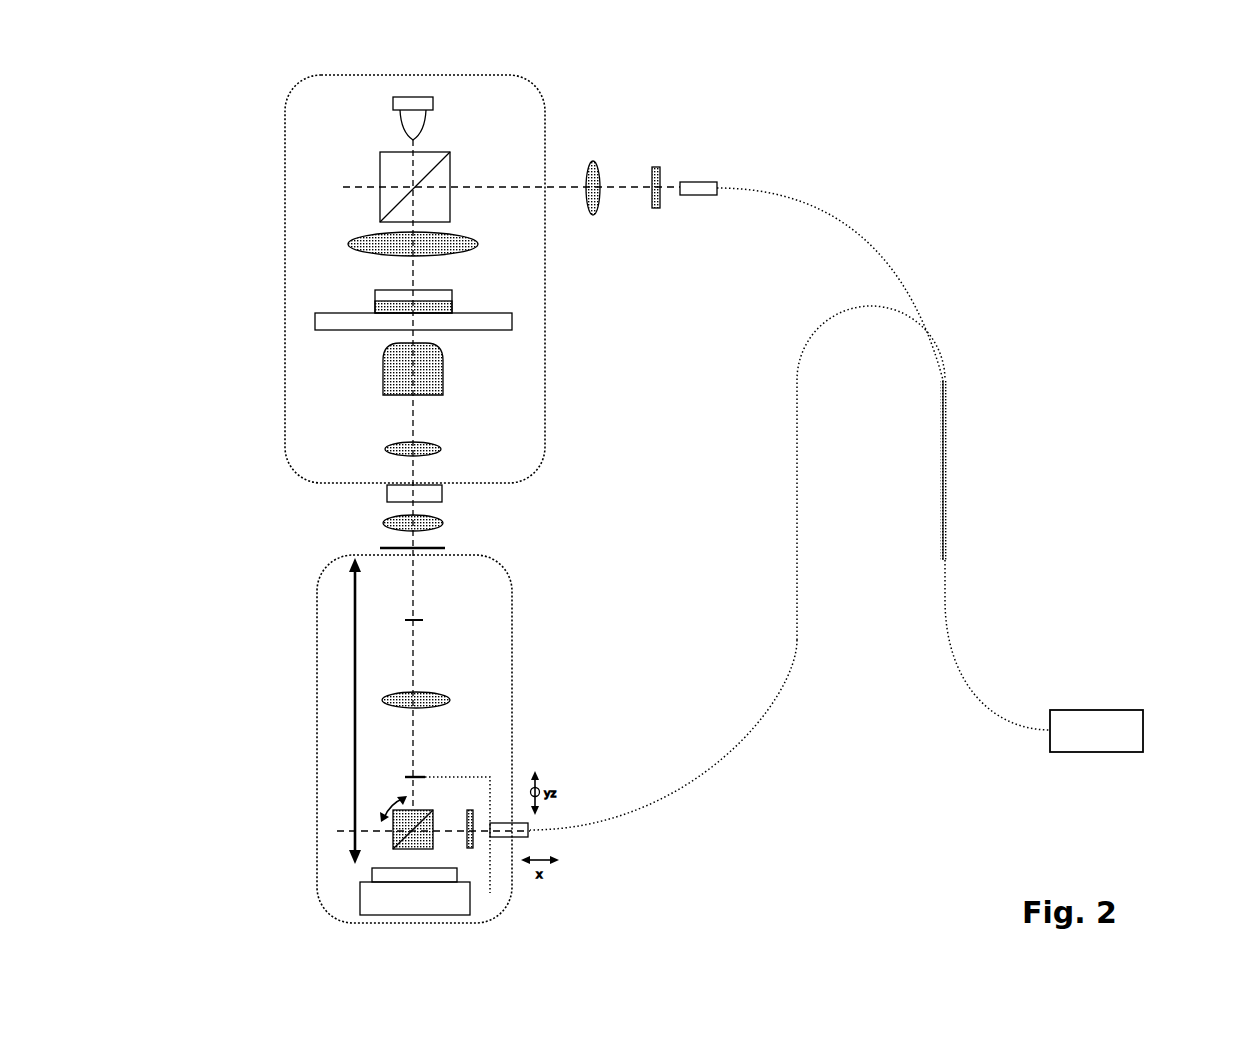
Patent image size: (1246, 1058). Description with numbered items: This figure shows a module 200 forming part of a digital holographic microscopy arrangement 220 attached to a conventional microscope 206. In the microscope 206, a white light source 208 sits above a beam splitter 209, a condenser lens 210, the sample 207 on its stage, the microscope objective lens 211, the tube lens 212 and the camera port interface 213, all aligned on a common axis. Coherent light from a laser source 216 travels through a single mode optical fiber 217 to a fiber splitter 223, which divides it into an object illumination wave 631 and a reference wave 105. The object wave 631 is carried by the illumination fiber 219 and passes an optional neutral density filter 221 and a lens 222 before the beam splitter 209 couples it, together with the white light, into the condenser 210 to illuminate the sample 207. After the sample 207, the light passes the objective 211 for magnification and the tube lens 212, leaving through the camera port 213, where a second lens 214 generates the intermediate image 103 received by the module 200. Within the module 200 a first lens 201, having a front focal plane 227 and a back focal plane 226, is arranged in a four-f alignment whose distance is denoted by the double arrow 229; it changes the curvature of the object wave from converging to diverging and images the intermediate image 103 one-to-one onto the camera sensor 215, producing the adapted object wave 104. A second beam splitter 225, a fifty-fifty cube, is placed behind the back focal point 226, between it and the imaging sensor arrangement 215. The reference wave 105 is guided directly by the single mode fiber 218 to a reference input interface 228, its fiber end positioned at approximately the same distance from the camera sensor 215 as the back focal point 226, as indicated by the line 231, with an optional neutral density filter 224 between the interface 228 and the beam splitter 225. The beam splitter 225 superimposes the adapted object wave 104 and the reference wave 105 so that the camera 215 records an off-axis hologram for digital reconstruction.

The module 200 is at (315, 775).
The microscope 206 is at (288, 455).
The white light source 208 is at (428, 103).
The beam splitter 209 is at (378, 160).
The condenser lens 210 is at (355, 240).
The sample 207 is at (380, 305).
The microscope objective lens 211 is at (388, 377).
The tube lens 212 is at (395, 448).
The camera port interface 213 is at (430, 492).
The second lens 214 is at (435, 525).
The intermediate image 103 is at (400, 548).
The object illumination wave 631 is at (505, 190).
The 4 f distance 229 is at (350, 610).
The front focal plane 227 is at (418, 620).
The first lens 201 is at (440, 695).
The adapted object wave 104 is at (405, 750).
The back focal plane 226 is at (420, 773).
The line 231 is at (470, 777).
The beam splitter 225 is at (395, 826).
The reference wave 105 is at (445, 832).
The neutral density filter 224 is at (475, 845).
The reference input interface 228 is at (528, 832).
The imaging sensor arrangement 215 is at (370, 878).
The lens 222 is at (595, 162).
The neutral density filter 221 is at (660, 168).
The single mode optical fiber 219 is at (828, 213).
The fiber splitter 223 is at (945, 460).
The single mode optical fiber 217 is at (950, 610).
The single mode optical fiber 218 is at (765, 725).
The coherent light source 216 is at (1078, 708).
The digital holographic microscopy arrangement 220 is at (1060, 124).